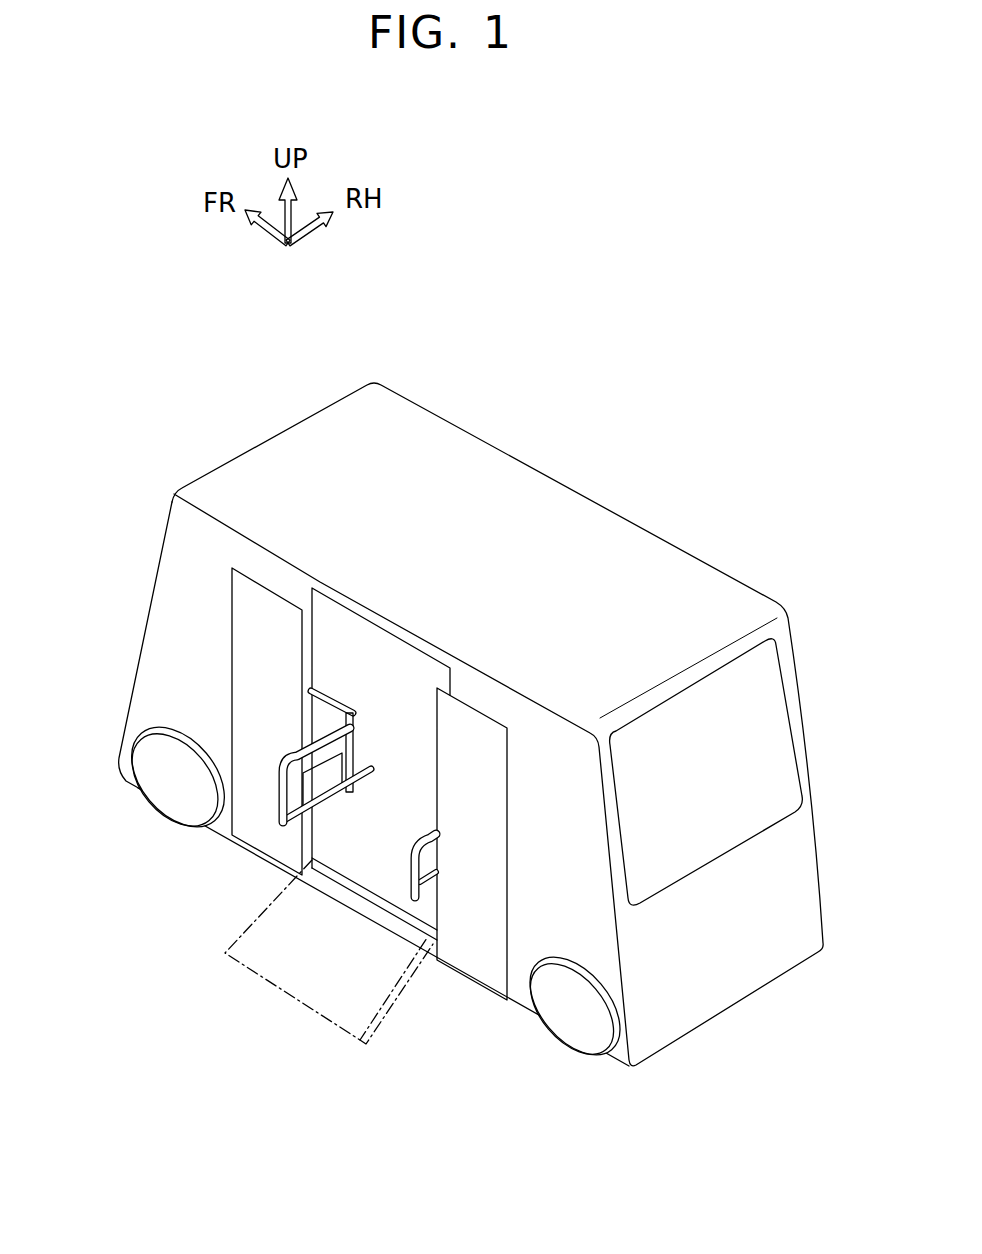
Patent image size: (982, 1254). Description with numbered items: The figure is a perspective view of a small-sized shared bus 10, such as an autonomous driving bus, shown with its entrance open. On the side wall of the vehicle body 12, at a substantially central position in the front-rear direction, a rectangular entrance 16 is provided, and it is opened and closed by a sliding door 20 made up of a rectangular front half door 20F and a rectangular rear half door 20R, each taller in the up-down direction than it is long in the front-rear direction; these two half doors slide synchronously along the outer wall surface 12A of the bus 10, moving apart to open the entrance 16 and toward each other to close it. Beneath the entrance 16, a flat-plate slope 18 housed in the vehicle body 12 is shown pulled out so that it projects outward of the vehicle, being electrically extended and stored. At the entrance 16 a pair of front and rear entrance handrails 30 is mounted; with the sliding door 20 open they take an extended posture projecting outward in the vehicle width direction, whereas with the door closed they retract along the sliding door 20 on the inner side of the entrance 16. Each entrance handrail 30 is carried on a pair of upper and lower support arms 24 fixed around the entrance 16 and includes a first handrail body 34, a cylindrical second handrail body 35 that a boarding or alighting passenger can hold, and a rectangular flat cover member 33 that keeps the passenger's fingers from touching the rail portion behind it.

The bus 10 is at (648, 412).
The vehicle body 12 is at (376, 381).
The outer wall surface 12A is at (181, 589).
The entrance 16 is at (378, 628).
The slope 18 is at (307, 1007).
The sliding door 20 is at (302, 825).
The front half door 20F is at (253, 823).
The rear half door 20R is at (465, 935).
The support arms 24 is at (342, 703).
The entrance handrail 30 is at (287, 758).
The cover member 33 is at (347, 767).
The first handrail body 34 is at (312, 700).
The second handrail body 35 is at (327, 807).